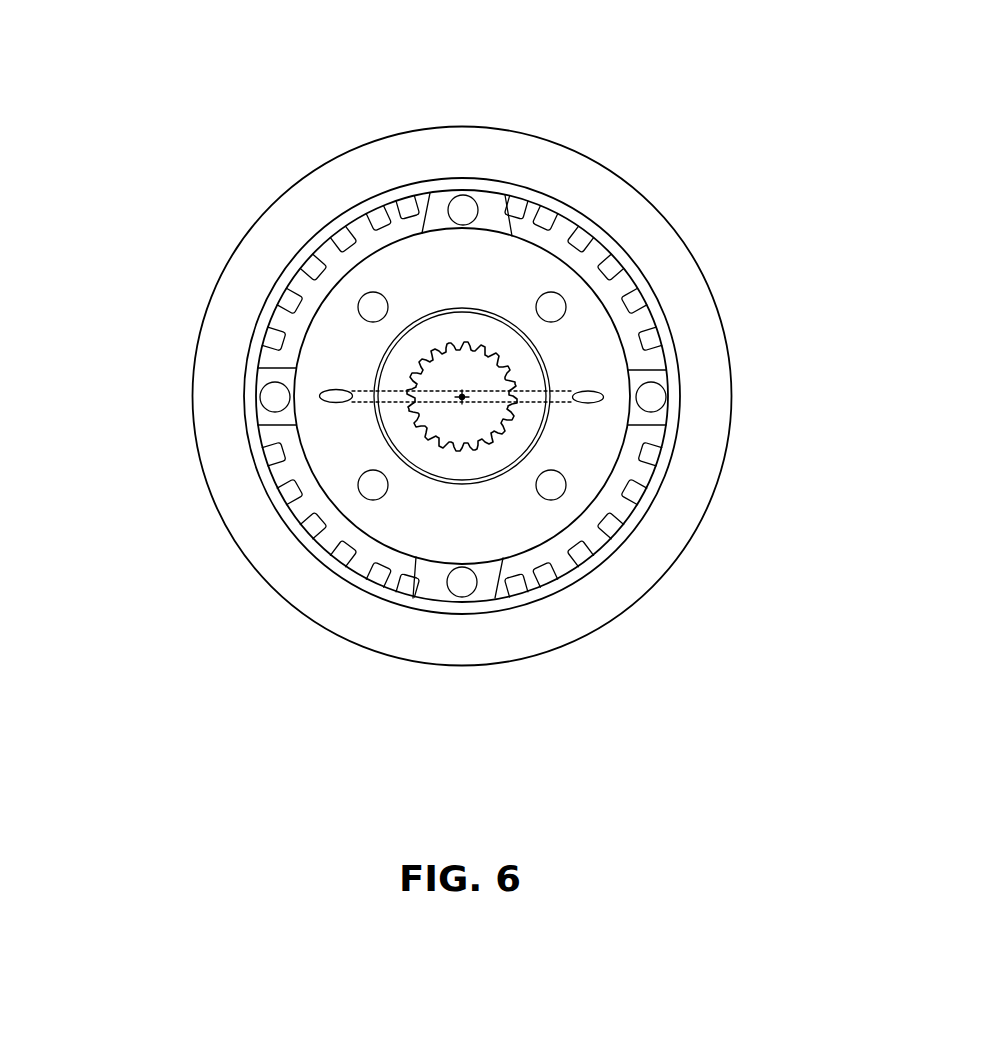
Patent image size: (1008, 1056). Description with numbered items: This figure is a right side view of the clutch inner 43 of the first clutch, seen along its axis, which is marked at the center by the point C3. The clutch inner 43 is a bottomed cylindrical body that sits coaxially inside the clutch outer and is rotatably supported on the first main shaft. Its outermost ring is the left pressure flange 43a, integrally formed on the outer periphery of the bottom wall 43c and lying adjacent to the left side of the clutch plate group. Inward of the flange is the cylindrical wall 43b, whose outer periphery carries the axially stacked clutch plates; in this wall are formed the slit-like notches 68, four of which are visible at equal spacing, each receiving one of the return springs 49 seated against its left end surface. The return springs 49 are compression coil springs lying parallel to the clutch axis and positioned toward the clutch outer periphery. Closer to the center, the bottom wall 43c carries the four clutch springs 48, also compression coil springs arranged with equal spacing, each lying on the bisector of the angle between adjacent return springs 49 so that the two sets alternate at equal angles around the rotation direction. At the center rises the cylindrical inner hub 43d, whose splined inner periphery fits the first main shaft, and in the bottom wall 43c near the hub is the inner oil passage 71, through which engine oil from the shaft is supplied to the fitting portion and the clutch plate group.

The clutch inner 43 is at (576, 149).
The left pressure flange 43a is at (612, 197).
The cylindrical wall 43b is at (600, 280).
The bottom wall 43c is at (590, 330).
The inner hub 43d is at (485, 325).
The clutch spring 48 is at (389, 306).
The return spring 49 is at (502, 197).
The slit-like notch 68 is at (430, 193).
The inner oil passage 71 is at (337, 389).
The center axis C3 is at (462, 398).